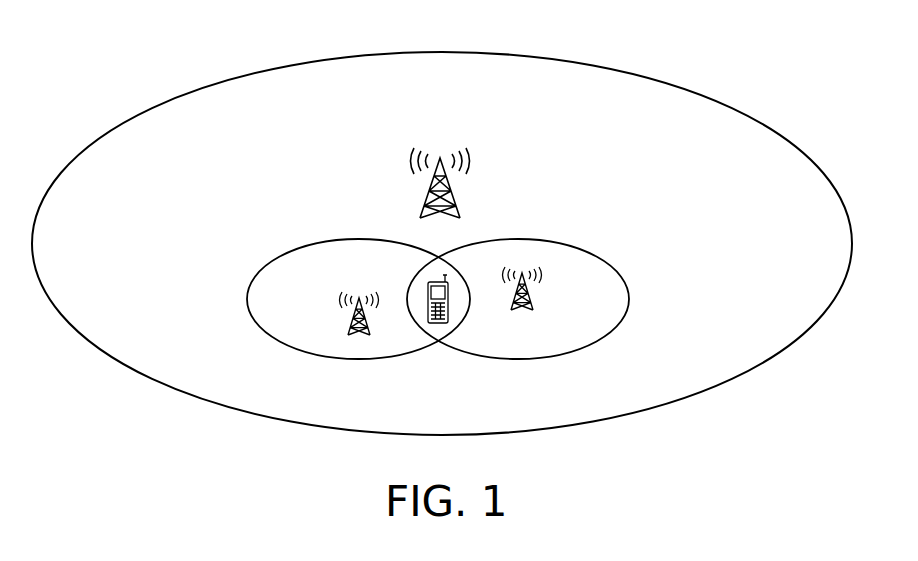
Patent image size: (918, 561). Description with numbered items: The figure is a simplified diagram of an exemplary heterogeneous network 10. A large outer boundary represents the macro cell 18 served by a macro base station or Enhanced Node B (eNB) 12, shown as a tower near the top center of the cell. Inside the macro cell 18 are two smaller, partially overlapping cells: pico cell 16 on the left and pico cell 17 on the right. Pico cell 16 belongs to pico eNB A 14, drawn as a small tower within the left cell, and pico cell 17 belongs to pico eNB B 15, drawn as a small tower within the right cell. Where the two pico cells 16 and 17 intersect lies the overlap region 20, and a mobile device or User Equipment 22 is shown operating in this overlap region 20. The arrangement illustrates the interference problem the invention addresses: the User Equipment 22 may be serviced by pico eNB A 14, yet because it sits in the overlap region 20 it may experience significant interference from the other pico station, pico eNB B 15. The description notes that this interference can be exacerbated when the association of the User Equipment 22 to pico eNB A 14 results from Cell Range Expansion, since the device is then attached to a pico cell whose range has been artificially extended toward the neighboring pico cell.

The heterogeneous network 10 is at (703, 63).
The macro base station or Enhanced Node B (eNB) 12 is at (426, 203).
The pico eNB A 14 is at (340, 323).
The pico eNB B 15 is at (535, 305).
The pico cell 16 is at (264, 332).
The pico cell 17 is at (617, 327).
The macro cell 18 is at (753, 372).
The overlap region 20 is at (440, 332).
The User Equipment 22 is at (425, 288).